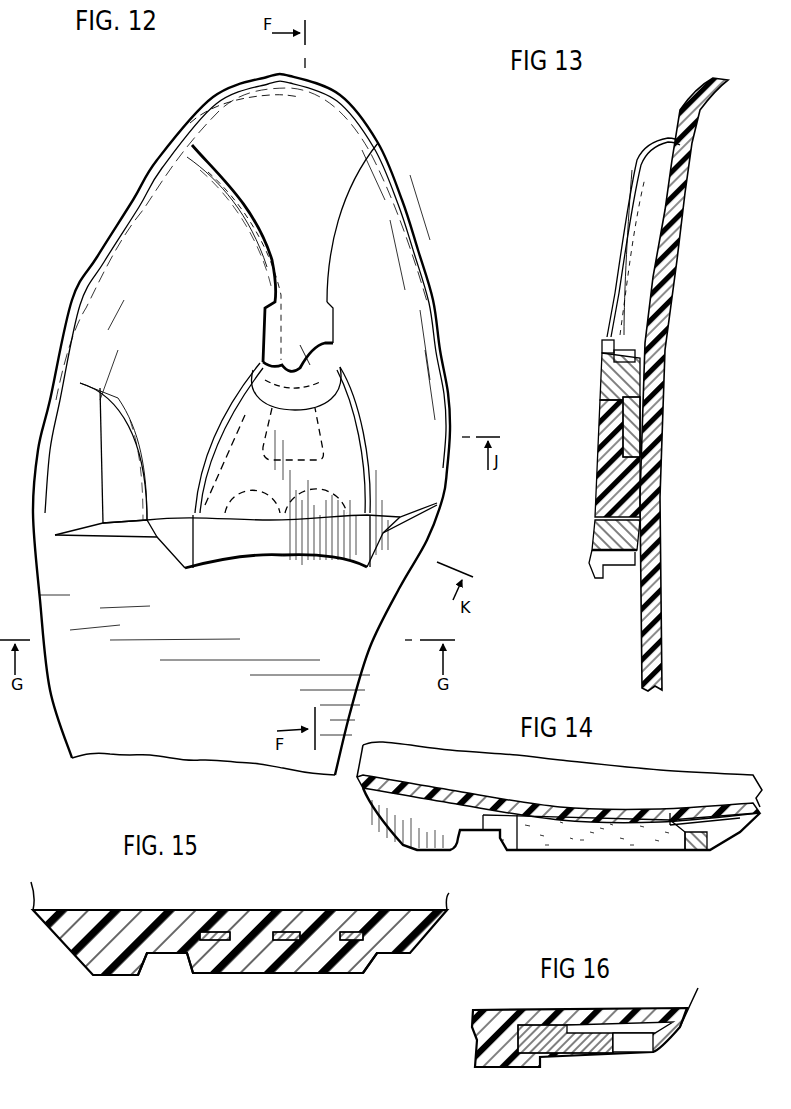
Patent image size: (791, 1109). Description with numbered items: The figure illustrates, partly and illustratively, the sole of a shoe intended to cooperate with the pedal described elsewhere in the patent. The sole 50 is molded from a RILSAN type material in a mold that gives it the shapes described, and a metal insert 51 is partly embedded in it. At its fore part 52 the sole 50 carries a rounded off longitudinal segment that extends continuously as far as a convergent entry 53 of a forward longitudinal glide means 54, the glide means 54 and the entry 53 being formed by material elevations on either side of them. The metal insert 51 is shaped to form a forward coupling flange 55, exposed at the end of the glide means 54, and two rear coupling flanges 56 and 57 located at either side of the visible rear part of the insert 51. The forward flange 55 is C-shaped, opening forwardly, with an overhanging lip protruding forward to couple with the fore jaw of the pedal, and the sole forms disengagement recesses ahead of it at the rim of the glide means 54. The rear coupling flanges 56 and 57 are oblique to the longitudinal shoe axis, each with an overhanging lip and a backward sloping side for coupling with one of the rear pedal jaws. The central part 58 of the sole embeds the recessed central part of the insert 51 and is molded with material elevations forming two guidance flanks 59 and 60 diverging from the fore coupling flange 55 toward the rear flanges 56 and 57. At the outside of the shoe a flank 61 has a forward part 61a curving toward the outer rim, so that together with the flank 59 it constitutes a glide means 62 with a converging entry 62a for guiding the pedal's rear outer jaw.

In FIG. 12, the sole 50 is at (142, 235).
In FIG. 12, the metal insert 51 is at (342, 567).
In FIG. 14, the metal insert 51 is at (598, 835).
In FIG. 15, the metal insert 51 is at (290, 930).
In FIG. 13, the fore part 52 is at (690, 96).
In FIG. 12, the convergent entry 53 is at (223, 117).
In FIG. 13, the convergent entry 53 is at (665, 187).
In FIG. 12, the forward longitudinal glide means 54 is at (317, 270).
In FIG. 13, the forward longitudinal glide means 54 is at (633, 253).
In FIG. 12, the forward coupling flange 55 is at (325, 353).
In FIG. 13, the forward coupling flange 55 is at (603, 344).
In FIG. 12, the rear coupling flange 56 is at (168, 558).
In FIG. 14, the rear coupling flange 56 is at (503, 850).
In FIG. 12, the rear coupling flange 57 is at (383, 548).
In FIG. 14, the rear coupling flange 57 is at (700, 850).
In FIG. 16, the rear coupling flange 57 is at (605, 1053).
In FIG. 12, the central part of the sole 58 is at (303, 500).
In FIG. 12, the guidance flank 59 is at (218, 430).
In FIG. 15, the guidance flank 59 is at (190, 973).
In FIG. 12, the guidance flank 60 is at (370, 442).
In FIG. 15, the guidance flank 60 is at (370, 973).
In FIG. 12, the flank 61 is at (128, 477).
In FIG. 15, the flank 61 is at (145, 975).
In FIG. 12, the forward part of the flank 61a is at (142, 368).
In FIG. 12, the glide means 62 is at (165, 507).
In FIG. 15, the glide means 62 is at (166, 968).
In FIG. 12, the converging entry 62a is at (193, 387).